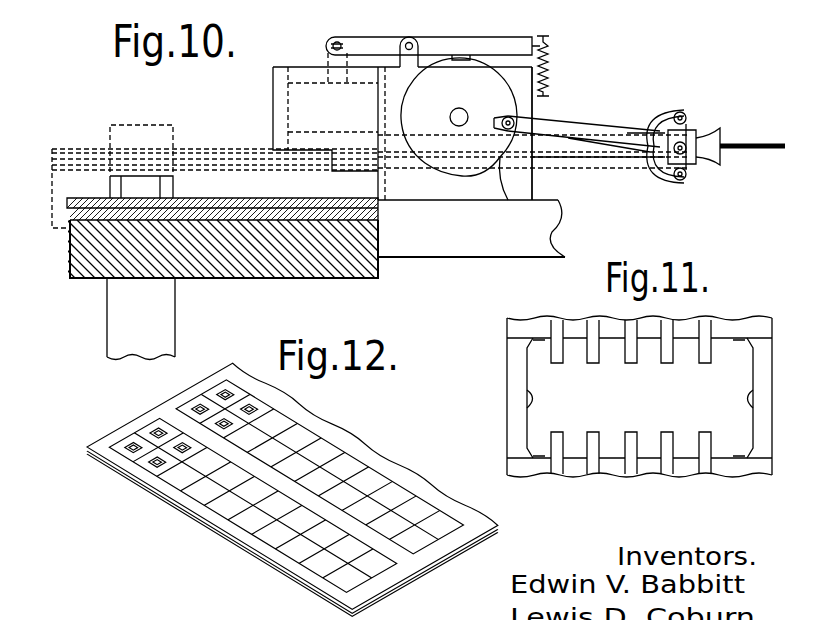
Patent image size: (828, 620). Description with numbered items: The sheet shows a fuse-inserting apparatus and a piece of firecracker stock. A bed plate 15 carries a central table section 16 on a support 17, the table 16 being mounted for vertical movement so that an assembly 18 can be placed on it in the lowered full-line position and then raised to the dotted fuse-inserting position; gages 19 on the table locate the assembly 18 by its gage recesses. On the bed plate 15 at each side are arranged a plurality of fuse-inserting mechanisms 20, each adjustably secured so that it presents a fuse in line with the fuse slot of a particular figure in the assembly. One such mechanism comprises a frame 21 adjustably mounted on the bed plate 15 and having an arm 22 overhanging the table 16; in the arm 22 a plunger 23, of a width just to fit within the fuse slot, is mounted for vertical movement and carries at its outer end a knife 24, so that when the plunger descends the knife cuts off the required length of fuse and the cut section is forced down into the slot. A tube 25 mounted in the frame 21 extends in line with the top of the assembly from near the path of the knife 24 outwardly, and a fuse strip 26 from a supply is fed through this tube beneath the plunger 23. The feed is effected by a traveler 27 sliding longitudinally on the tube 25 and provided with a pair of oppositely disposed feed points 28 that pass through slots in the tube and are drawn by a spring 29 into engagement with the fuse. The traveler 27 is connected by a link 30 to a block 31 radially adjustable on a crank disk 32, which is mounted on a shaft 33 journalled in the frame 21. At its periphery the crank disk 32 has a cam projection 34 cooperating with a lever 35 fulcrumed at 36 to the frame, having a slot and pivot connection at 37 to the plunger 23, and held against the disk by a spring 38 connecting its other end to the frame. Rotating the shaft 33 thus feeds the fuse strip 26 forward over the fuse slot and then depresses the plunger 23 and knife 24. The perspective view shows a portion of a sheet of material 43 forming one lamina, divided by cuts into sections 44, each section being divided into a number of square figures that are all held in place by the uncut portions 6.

In FIG. 12, the uncut portions 6 is at (185, 420).
In FIG. 10, the bed plate 15 is at (485, 248).
In FIG. 11, the bed plate 15 is at (765, 326).
In FIG. 10, the table section 16 is at (362, 280).
In FIG. 11, the table section 16 is at (766, 361).
In FIG. 10, the support 17 is at (170, 312).
In FIG. 10, the assembly 18 is at (76, 216).
In FIG. 11, the assembly 18 is at (738, 424).
In FIG. 10, the gages 19 is at (165, 191).
In FIG. 11, the gages 19 is at (526, 396).
In FIG. 11, the fuse-inserting mechanisms 20 is at (703, 322).
In FIG. 10, the frame 21 is at (532, 178).
In FIG. 10, the arm 22 is at (273, 77).
In FIG. 10, the plunger 23 is at (288, 103).
In FIG. 10, the knife 24 is at (378, 134).
In FIG. 10, the tube 25 is at (596, 157).
In FIG. 10, the fuse strip 26 is at (736, 141).
In FIG. 10, the traveler 27 is at (696, 132).
In FIG. 10, the feed points 28 is at (646, 128).
In FIG. 10, the spring 29 is at (669, 118).
In FIG. 10, the link 30 is at (572, 120).
In FIG. 10, the block 31 is at (505, 118).
In FIG. 10, the crank disk 32 is at (438, 161).
In FIG. 10, the shaft 33 is at (462, 109).
In FIG. 10, the cam projection 34 is at (506, 194).
In FIG. 10, the lever 35 is at (481, 40).
In FIG. 10, the fulcrum 36 is at (411, 42).
In FIG. 10, the slot and pivot connection 37 is at (339, 43).
In FIG. 10, the spring 38 is at (552, 66).
In FIG. 12, the sheet of material 43 is at (198, 510).
In FIG. 12, the sections 44 is at (138, 423).